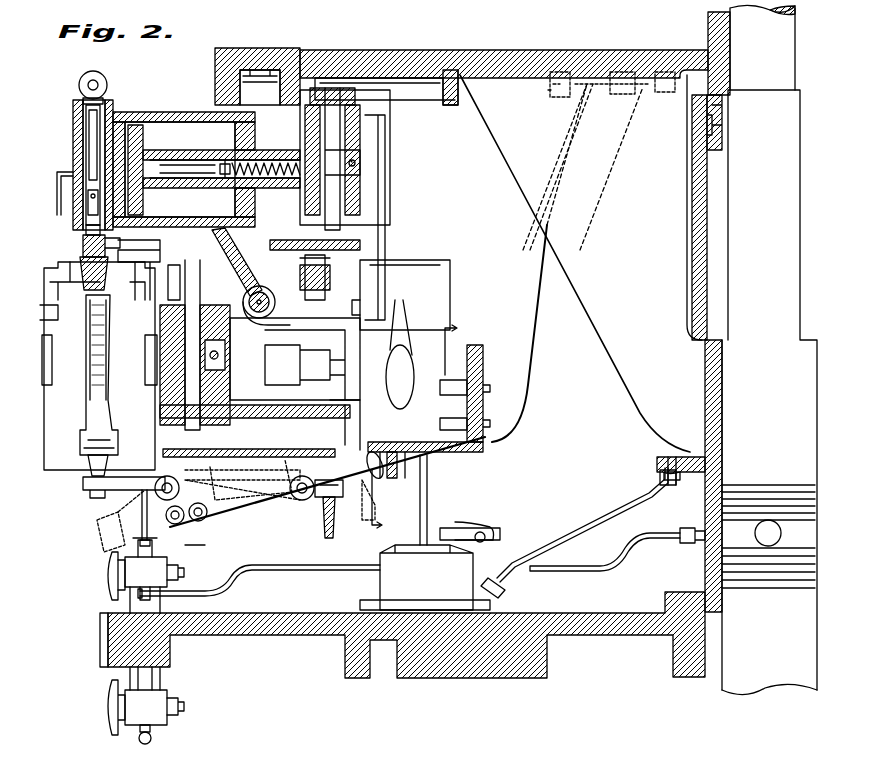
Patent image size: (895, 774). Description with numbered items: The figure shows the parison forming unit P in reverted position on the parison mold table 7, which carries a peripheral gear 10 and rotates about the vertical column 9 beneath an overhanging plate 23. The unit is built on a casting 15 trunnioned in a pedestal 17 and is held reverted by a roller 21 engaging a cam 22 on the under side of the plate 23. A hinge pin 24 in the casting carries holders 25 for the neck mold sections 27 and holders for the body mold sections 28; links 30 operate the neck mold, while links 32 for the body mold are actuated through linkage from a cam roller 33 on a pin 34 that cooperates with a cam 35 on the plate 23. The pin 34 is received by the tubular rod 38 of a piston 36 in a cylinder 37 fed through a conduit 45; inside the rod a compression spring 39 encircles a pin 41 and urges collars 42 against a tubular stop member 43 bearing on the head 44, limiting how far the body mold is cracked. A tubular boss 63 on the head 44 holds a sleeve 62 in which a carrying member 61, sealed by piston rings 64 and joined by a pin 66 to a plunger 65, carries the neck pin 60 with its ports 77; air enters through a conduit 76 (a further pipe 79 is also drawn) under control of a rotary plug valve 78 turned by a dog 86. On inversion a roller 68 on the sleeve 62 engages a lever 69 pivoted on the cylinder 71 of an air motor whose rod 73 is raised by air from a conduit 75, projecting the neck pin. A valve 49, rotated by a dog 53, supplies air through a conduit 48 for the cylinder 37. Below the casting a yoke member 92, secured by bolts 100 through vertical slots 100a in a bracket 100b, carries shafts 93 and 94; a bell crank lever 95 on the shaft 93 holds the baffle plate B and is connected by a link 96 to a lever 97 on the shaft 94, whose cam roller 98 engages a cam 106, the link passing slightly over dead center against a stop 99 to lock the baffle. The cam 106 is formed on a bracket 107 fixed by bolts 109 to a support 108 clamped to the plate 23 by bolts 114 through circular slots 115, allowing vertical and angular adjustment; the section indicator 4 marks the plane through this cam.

The vertical column 9 is at (705, 382).
The plate 23 is at (432, 50).
The bolts 114 is at (557, 70).
The circular slots 115 is at (625, 68).
The cam 22 is at (286, 62).
The roller 21 is at (257, 68).
The cam 35 is at (322, 86).
The cam roller 33 is at (358, 96).
The pin 34 is at (335, 160).
The cylinder 37 is at (190, 110).
The head 44 is at (122, 112).
The piston 36 is at (148, 112).
The compression spring 39 is at (266, 189).
The tubular rod 38 is at (168, 150).
The tubular stop member 43 is at (221, 179).
The pin 41 is at (222, 186).
The collars 42 is at (240, 162).
The tubular boss 63 is at (73, 118).
The sleeve 62 is at (86, 136).
The roller 68 is at (86, 88).
The conduit 76 is at (57, 174).
The plunger 65 is at (94, 176).
The pin 66 is at (93, 200).
The carrying member 61 is at (84, 234).
The neck pin 60 is at (48, 260).
The parison forming unit P is at (56, 256).
The piston rings 64 is at (110, 242).
The holders 25 is at (142, 272).
The neck mold sections 27 is at (60, 300).
The ports 77 is at (108, 275).
The body mold sections 28 is at (58, 470).
The baffle plate B is at (90, 500).
The hinge pin 24 is at (192, 415).
The casting 15 is at (262, 420).
The links 32 is at (340, 418).
The conduit 45 is at (232, 276).
The links 30 is at (305, 280).
The pedestal 17 is at (402, 325).
The section line 4 is at (421, 427).
The bolts 109 is at (490, 432).
The bracket 107 is at (465, 452).
The cam 106 is at (405, 462).
The support 108 is at (535, 385).
The vertical slots 100a is at (320, 445).
The bracket 100b is at (352, 425).
The bell crank lever 95 is at (142, 497).
The shaft 93 is at (180, 524).
The lever 97 is at (235, 508).
The yoke member 92 is at (290, 498).
The shaft 94 is at (304, 500).
The link 96 is at (195, 520).
The stop 99 is at (222, 520).
The bolts 100 is at (330, 535).
The cam roller 98 is at (375, 480).
The rod 73 is at (420, 555).
The cylinder 71 is at (380, 582).
The lever 69 is at (462, 526).
The conduit 75 is at (580, 530).
The pipe 79 is at (598, 566).
The parison mold table 7 is at (568, 610).
The gear 10 is at (106, 640).
The dog 86 is at (110, 580).
The rotary plug valve 78 is at (140, 573).
The valve 49 is at (165, 726).
The dog 53 is at (110, 722).
The conduit 48 is at (147, 745).